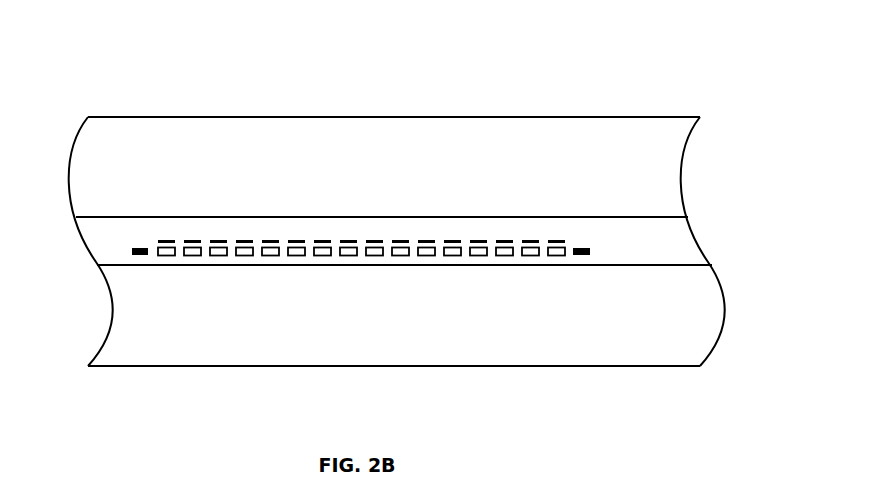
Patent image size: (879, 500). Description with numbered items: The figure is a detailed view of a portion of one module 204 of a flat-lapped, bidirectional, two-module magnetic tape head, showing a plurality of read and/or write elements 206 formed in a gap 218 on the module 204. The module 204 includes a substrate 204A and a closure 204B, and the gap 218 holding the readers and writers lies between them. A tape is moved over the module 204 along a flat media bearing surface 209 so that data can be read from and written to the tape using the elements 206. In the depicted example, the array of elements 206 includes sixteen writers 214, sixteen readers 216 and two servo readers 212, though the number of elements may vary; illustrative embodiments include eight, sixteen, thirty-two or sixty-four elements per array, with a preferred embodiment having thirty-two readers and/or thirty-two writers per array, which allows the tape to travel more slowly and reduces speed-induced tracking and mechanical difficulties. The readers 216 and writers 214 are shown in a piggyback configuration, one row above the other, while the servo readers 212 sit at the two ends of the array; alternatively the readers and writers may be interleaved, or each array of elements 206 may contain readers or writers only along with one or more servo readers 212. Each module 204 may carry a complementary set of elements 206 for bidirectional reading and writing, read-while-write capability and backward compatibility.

The module 204 is at (101, 99).
The substrate 204A is at (189, 117).
The closure 204B is at (243, 366).
The media bearing surface 209 is at (320, 183).
The writers 214 is at (474, 241).
The readers 216 is at (480, 256).
The servo readers 212 is at (131, 249).
The read and/or write elements 206 is at (602, 242).
The gap 218 is at (703, 242).